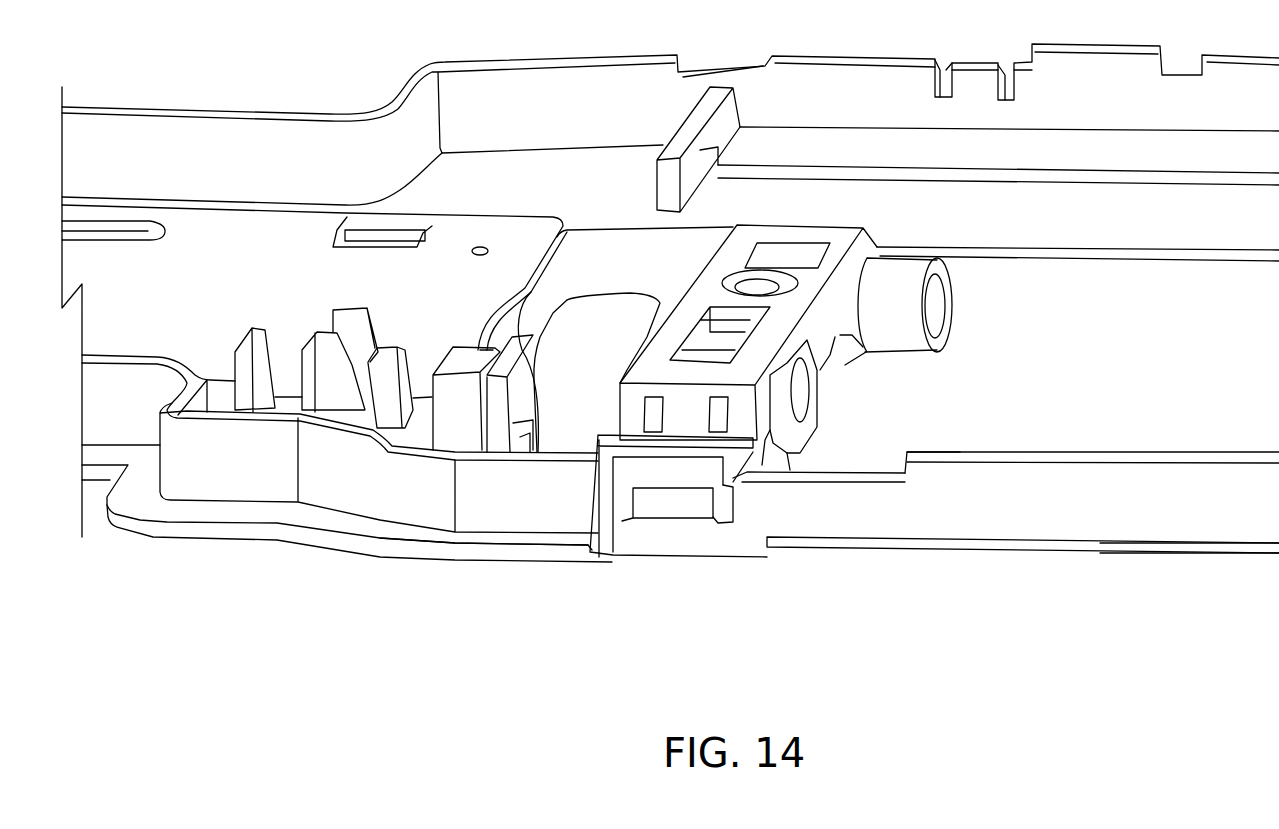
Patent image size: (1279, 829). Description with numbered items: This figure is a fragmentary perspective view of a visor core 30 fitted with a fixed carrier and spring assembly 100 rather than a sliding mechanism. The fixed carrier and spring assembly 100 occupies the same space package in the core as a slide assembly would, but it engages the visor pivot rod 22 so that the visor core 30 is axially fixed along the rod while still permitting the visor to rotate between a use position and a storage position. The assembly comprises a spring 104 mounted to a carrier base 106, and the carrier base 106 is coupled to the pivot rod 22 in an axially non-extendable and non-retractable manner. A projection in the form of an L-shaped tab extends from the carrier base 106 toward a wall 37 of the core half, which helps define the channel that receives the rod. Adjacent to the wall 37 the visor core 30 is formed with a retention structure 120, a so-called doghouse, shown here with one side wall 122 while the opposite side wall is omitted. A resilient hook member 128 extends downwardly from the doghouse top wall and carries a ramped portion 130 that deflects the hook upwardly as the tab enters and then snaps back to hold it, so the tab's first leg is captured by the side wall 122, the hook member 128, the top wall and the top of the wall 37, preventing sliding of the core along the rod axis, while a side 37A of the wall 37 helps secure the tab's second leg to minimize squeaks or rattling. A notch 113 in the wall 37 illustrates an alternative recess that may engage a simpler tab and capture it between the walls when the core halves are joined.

The fixed carrier and spring assembly 100 is at (542, 208).
The spring 104 is at (272, 283).
The carrier base 106 is at (628, 282).
The visor pivot rod 22 is at (902, 337).
The notch 113 is at (888, 470).
The wall 37 is at (1033, 452).
The side of wall 37A is at (962, 503).
The visor core 30 is at (1173, 393).
The retention structure 120 is at (632, 569).
The side wall 122 is at (590, 518).
The resilient hook member 128 is at (710, 522).
The ramped portion 130 is at (743, 475).